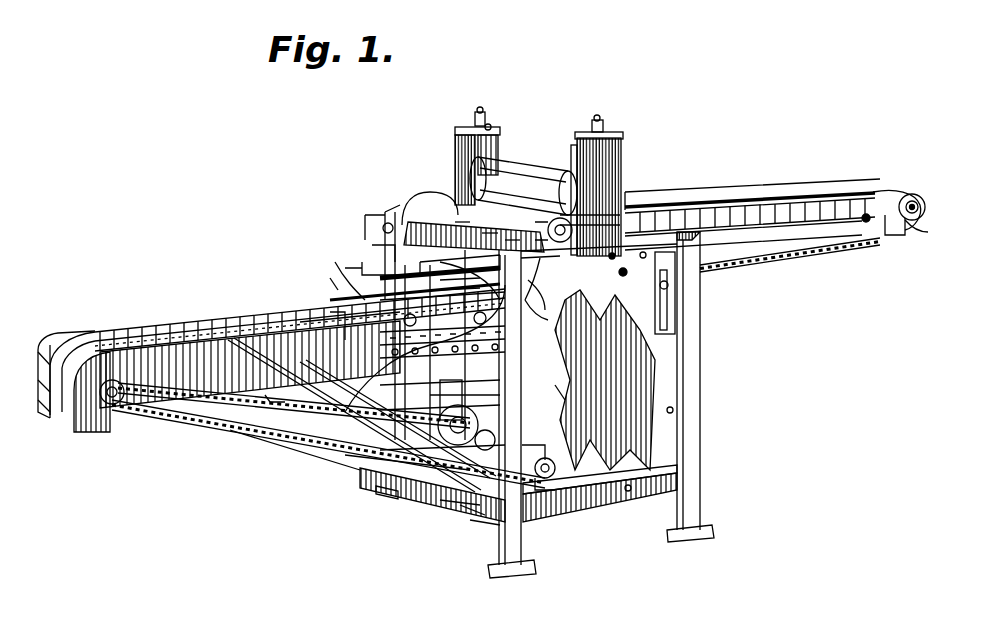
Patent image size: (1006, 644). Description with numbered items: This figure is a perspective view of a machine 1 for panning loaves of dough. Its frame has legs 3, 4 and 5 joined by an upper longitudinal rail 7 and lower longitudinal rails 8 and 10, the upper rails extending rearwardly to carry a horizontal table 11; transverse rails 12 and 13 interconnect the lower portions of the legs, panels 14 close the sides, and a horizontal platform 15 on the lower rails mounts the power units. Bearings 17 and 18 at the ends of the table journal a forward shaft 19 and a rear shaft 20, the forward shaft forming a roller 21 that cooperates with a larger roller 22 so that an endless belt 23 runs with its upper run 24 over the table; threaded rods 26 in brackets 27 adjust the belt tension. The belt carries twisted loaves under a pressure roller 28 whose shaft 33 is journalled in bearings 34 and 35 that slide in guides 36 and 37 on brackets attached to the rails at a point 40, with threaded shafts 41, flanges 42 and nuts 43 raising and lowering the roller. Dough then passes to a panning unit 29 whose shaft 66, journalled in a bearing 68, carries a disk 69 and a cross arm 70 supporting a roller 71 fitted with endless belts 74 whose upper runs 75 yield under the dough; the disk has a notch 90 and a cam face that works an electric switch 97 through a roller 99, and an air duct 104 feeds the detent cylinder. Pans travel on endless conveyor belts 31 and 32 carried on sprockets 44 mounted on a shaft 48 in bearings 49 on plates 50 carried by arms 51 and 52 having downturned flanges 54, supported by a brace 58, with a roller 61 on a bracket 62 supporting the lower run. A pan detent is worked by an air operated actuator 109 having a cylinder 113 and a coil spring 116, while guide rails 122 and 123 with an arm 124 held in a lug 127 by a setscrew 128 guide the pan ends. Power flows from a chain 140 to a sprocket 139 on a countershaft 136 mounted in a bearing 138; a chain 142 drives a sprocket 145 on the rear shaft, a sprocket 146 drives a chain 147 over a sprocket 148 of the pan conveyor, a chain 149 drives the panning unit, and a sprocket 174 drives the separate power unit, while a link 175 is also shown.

The machine 1 is at (666, 505).
The leg 3 is at (495, 545).
The leg 4 is at (701, 430).
The leg 5 is at (385, 455).
The upper longitudinal rail 7 is at (560, 258).
The lower longitudinal rail 8 is at (592, 506).
The lower longitudinal rail 10 is at (445, 500).
The horizontal table 11 is at (872, 192).
The transverse rail 12 is at (480, 530).
The transverse rail 13 is at (685, 467).
The panel 14 is at (676, 382).
The horizontal platform 15 is at (629, 492).
The bearing 17 is at (583, 216).
The bearing 18 is at (914, 193).
The forward shaft 19 is at (590, 236).
The rear shaft 20 is at (926, 205).
The roller 21 is at (512, 240).
The roller 22 is at (895, 185).
The endless belt 23 is at (745, 191).
The upper run 24 is at (695, 183).
The threaded rod 26 is at (867, 224).
The bracket 27 is at (897, 226).
The pressure roller 28 is at (525, 160).
The panning unit 29 is at (445, 210).
The endless conveyor belt 31 is at (190, 316).
The endless conveyor belt 32 is at (225, 332).
The shaft 33 is at (615, 146).
The bearing 34 is at (460, 165).
The bearing 35 is at (600, 133).
The guide 36 is at (455, 138).
The guide 37 is at (580, 140).
The attachment point 40 is at (611, 260).
The threaded shaft 41 is at (596, 118).
The flange 42 is at (492, 126).
The nut 43 is at (600, 116).
The sprocket 44 is at (52, 408).
The shaft 48 is at (110, 405).
The bearing 49 is at (74, 425).
The plate 50 is at (148, 338).
The arm 51 is at (163, 322).
The arm 52 is at (276, 320).
The downturned flange 54 is at (260, 392).
The brace 58 is at (296, 402).
The roller 61 is at (332, 320).
The bracket 62 is at (280, 398).
The shaft 66 is at (546, 306).
The bearing 68 is at (550, 319).
The disk 69 is at (395, 214).
The cross arm 70 is at (490, 236).
The roller 71 is at (383, 228).
The endless belt 74 is at (383, 245).
The upper run 75 is at (464, 224).
The notch 90 is at (425, 198).
The electric switch 97 is at (372, 216).
The roller 99 is at (365, 266).
The duct 104 is at (510, 342).
The air operated actuator 109 is at (470, 396).
The cylinder 113 is at (480, 416).
The coil spring 116 is at (475, 385).
The guide rail 122 is at (338, 266).
The guide rail 123 is at (328, 280).
The arm 124 is at (505, 356).
The lug 127 is at (508, 322).
The setscrew 128 is at (500, 312).
The countershaft 136 is at (556, 462).
The bearing 138 is at (548, 447).
The sprocket 139 is at (522, 432).
The chain 140 is at (470, 510).
The chain 142 is at (762, 258).
The sprocket 145 is at (928, 222).
The sprocket 146 is at (552, 472).
The chain 147 is at (310, 447).
The sprocket 148 is at (122, 402).
The chain 149 is at (392, 282).
The sprocket 174 is at (392, 497).
The link 175 is at (562, 393).